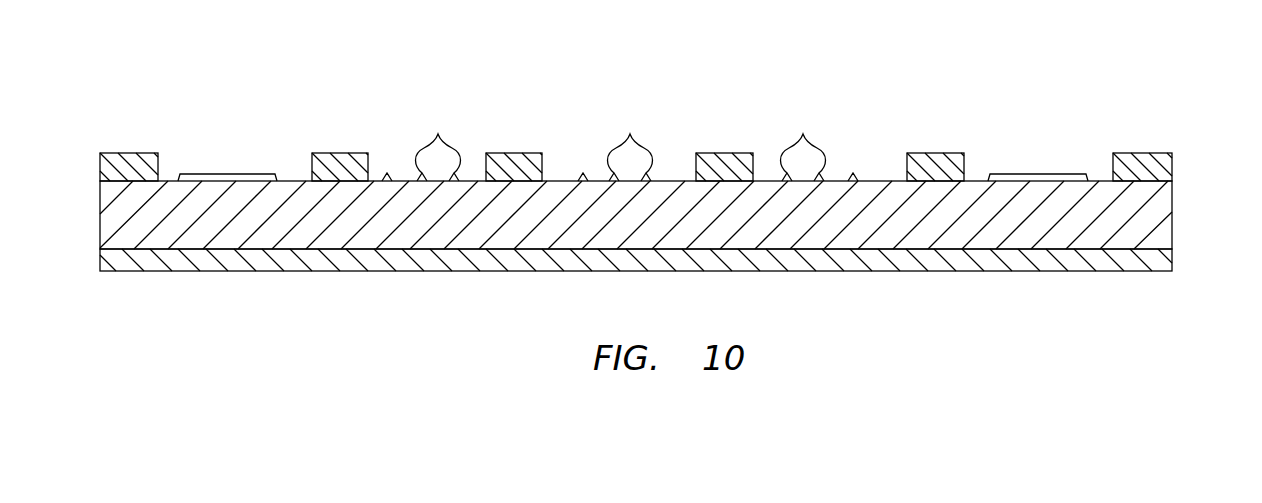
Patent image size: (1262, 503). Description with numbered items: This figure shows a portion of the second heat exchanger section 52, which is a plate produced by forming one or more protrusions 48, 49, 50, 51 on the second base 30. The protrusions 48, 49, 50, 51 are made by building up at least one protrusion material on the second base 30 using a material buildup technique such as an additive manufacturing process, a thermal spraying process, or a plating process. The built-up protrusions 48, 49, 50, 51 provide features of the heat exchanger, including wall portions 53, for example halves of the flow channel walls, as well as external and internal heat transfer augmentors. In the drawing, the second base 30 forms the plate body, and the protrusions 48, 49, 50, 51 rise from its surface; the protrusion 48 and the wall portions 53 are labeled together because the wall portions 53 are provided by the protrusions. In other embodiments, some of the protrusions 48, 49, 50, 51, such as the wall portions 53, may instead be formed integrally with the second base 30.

The second base 30 is at (128, 242).
The protrusion 48 is at (636, 122).
The protrusion 49 is at (227, 272).
The protrusion 50 is at (438, 134).
The protrusion 51 is at (225, 173).
The second heat exchanger section 52 is at (1166, 84).
The wall portion 53 is at (131, 152).